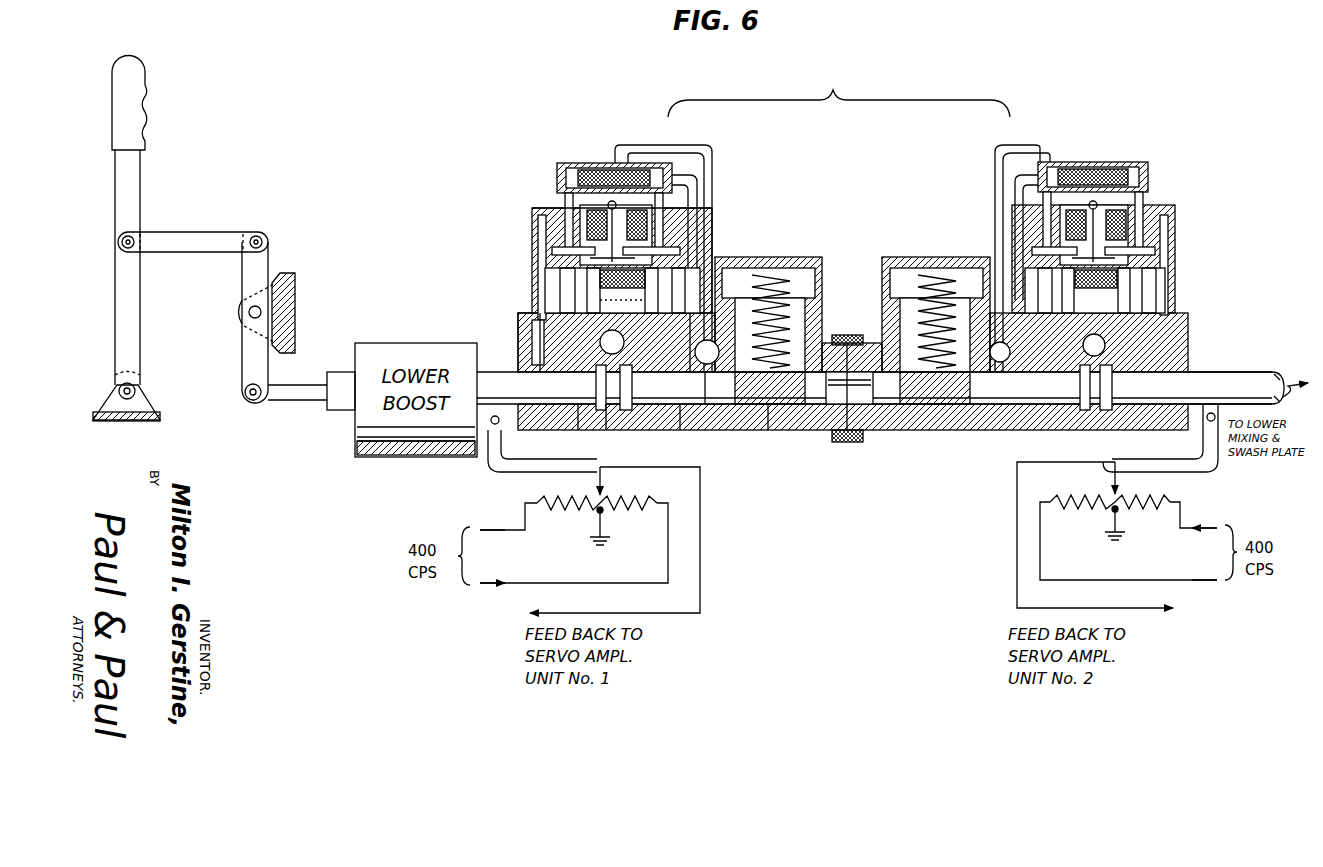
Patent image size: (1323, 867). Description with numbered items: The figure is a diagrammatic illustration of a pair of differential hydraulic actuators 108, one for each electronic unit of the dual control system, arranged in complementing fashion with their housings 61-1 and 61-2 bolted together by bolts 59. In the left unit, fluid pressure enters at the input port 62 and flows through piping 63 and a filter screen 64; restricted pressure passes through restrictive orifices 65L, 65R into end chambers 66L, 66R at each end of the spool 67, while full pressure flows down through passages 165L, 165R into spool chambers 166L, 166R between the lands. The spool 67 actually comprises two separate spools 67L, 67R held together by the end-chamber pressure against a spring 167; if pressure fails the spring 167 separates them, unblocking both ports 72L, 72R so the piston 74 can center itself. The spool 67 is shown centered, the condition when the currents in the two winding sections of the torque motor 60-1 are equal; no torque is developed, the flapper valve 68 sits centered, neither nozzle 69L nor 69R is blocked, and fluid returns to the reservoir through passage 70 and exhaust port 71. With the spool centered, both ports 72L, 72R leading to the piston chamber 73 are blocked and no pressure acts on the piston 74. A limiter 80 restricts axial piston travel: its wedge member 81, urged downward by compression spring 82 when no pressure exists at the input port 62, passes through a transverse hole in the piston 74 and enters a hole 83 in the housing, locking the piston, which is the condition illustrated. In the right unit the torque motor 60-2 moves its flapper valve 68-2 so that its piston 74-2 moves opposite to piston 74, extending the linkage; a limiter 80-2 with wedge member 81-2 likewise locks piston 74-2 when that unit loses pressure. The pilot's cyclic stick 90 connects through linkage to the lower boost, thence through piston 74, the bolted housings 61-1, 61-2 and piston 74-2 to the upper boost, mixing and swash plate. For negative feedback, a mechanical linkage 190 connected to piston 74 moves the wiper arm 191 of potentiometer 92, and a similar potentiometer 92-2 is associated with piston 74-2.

The pilot's cyclic stick 90 is at (135, 78).
The filter screen 64 is at (605, 163).
The differential hydraulic actuator 108 is at (839, 93).
The torque motor 60-1 is at (562, 220).
The torque motor 60-2 is at (1122, 205).
The passage 165L is at (538, 218).
The passage 165R is at (706, 210).
The restrictive orifice 65L is at (552, 250).
The restrictive orifice 65R is at (664, 250).
The flapper valve 68 is at (606, 256).
The flapper valve 68-2 is at (1142, 243).
The nozzle 69L is at (590, 232).
The nozzle 69R is at (645, 226).
The end chamber 66L is at (562, 290).
The end chamber 66R is at (682, 280).
The spool 67 is at (585, 294).
The spool 67L is at (530, 345).
The spool 67R is at (682, 422).
The housing 61-1 is at (516, 326).
The housing 61-2 is at (1190, 330).
The piping 63 is at (618, 206).
The limiter 80 is at (800, 256).
The limiter 80-2 is at (913, 256).
The compression spring 82 is at (795, 285).
The wedge member 81 is at (790, 410).
The wedge member 81-2 is at (935, 410).
The bolt 59 is at (840, 336).
The piston 74 is at (695, 406).
The piston 74-2 is at (1217, 388).
The spool chamber 166L is at (540, 365).
The spool chamber 166R is at (706, 412).
The port 72L is at (596, 374).
The port 72R is at (633, 410).
The piston chamber 73 is at (580, 410).
The spring 167 is at (606, 410).
The passage 70 is at (702, 378).
The exhaust port 71 is at (613, 342).
The input port 62 is at (708, 352).
The hole 83 is at (767, 430).
The mechanical linkage 190 is at (490, 462).
The wiper arm 191 is at (602, 478).
The potentiometer 92 is at (556, 495).
The potentiometer 92-2 is at (1175, 492).